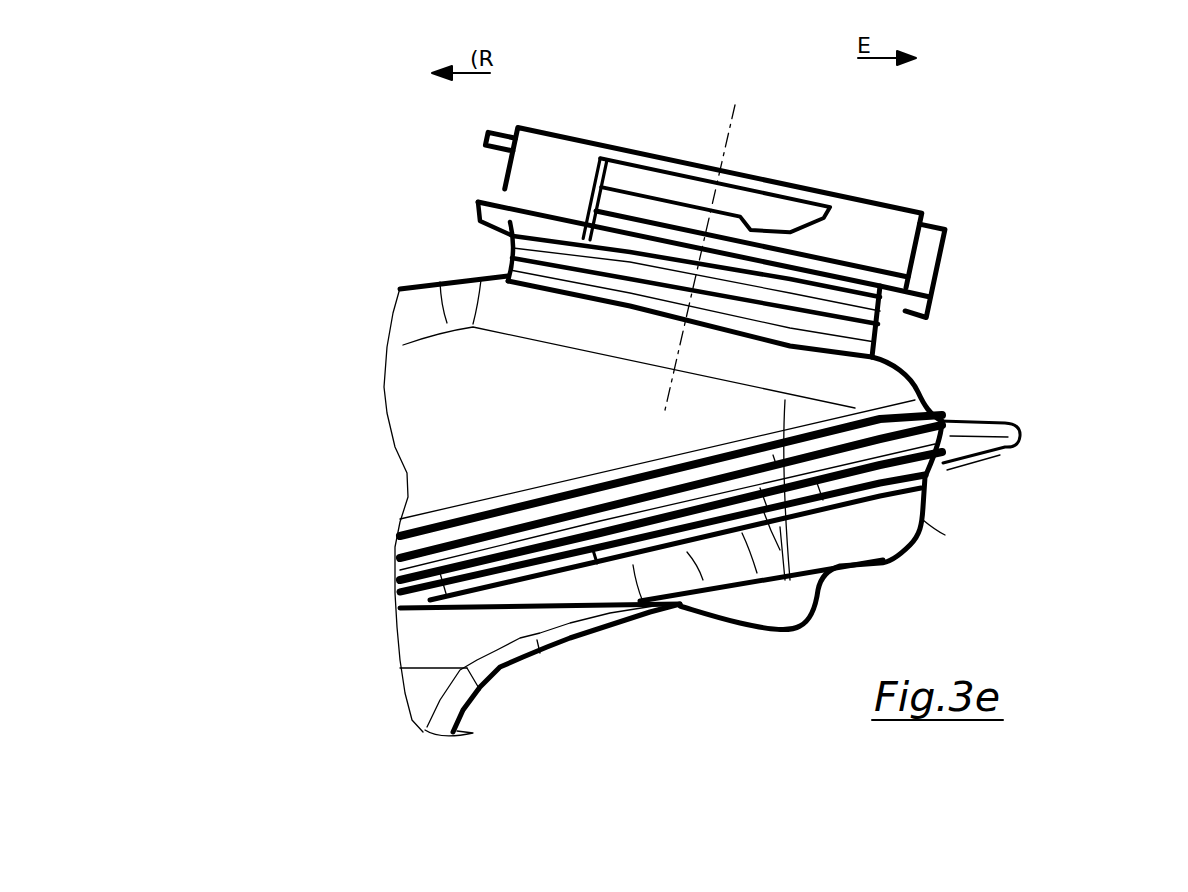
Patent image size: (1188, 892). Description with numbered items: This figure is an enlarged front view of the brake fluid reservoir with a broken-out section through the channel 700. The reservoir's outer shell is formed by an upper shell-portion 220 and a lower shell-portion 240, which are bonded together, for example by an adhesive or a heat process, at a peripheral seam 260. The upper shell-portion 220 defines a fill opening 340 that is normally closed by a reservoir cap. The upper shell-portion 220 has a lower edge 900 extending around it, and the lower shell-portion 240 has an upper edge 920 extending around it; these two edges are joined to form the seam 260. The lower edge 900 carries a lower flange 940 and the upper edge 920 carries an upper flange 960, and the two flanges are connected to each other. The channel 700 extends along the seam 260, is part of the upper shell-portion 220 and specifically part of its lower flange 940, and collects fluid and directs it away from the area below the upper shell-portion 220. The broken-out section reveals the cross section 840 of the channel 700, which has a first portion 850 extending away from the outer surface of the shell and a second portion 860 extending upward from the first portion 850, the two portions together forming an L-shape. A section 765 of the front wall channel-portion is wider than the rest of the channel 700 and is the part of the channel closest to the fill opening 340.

The fill opening 340 is at (843, 190).
The upper shell-portion 220 is at (420, 407).
The upper edge 920 is at (478, 522).
The peripheral seam 260 is at (400, 570).
The lower shell-portion 240 is at (423, 637).
The lower edge 900 is at (527, 543).
The lower flange 940 is at (937, 405).
The section 765 is at (980, 437).
The second portion 860 is at (1018, 425).
The first portion 850 is at (983, 460).
The cross section 840 is at (1047, 455).
The channel 700 is at (923, 540).
The upper flange 960 is at (923, 520).